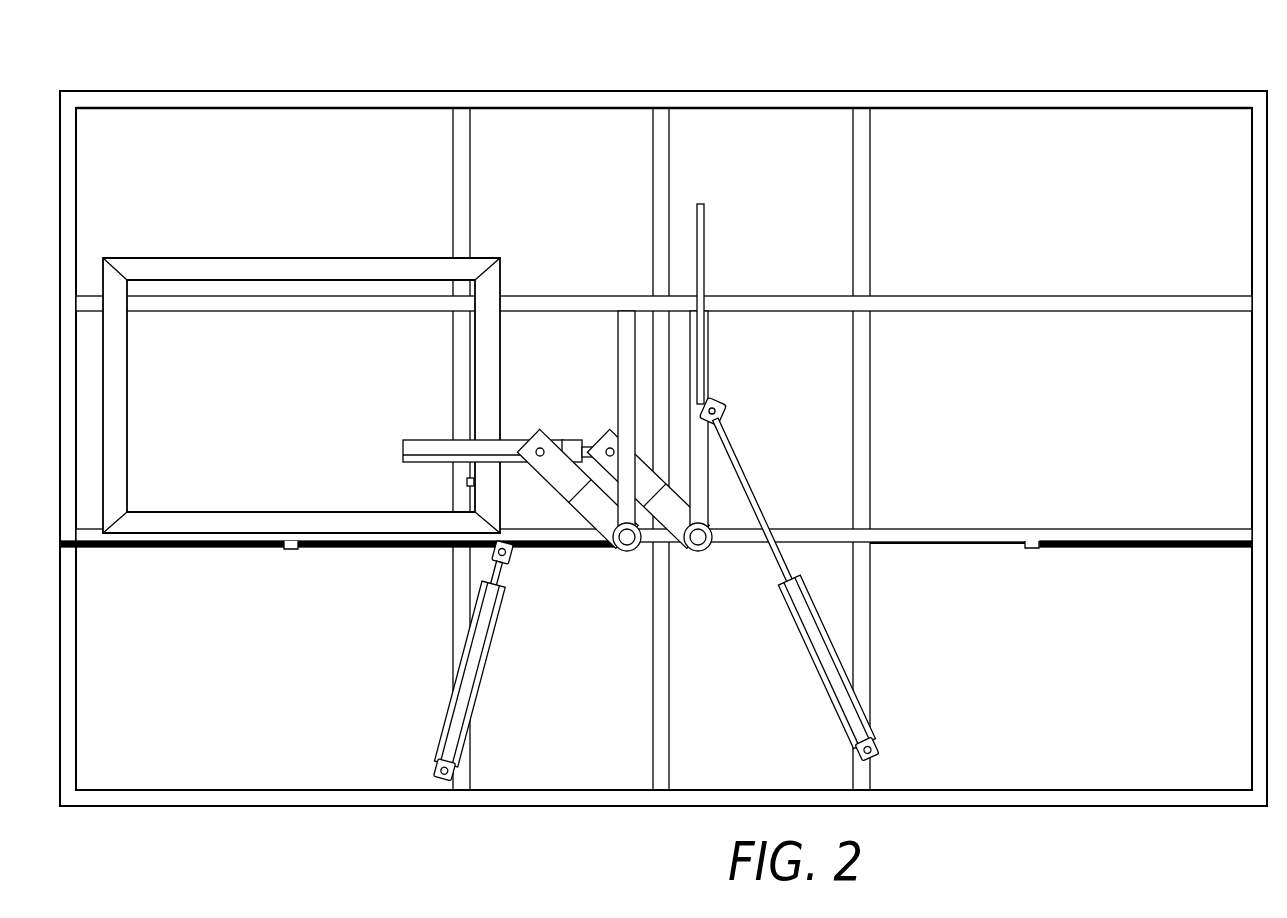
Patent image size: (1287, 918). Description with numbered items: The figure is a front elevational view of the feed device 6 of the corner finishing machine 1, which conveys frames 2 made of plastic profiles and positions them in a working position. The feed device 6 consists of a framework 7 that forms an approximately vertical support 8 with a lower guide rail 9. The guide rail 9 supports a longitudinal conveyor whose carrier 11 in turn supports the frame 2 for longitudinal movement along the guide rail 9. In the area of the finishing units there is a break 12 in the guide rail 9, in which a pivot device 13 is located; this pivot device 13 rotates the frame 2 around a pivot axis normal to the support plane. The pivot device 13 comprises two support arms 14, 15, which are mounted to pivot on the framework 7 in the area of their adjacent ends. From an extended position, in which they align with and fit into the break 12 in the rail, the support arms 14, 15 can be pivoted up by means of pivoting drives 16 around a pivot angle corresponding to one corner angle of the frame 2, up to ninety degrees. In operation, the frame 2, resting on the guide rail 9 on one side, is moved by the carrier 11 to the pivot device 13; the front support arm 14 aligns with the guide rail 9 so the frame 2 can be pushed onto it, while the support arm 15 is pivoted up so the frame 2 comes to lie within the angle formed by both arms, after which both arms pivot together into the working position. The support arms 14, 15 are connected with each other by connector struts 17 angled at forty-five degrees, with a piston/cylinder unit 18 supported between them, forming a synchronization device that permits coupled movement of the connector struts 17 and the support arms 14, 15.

The corner finishing machine 1 is at (663, 418).
The frame 2 is at (271, 265).
The feed device 6 is at (283, 91).
The framework 7 is at (497, 100).
The vertical support 8 is at (1022, 141).
The guide rail 9 is at (226, 547).
The carrier 11 is at (520, 482).
The break 12 is at (927, 550).
The pivot device 13 is at (728, 396).
The support arm 14 is at (346, 548).
The support arm 15 is at (705, 248).
The pivoting drive 16 is at (472, 668).
The connector strut 17 is at (604, 433).
The piston/cylinder unit 18 is at (432, 448).